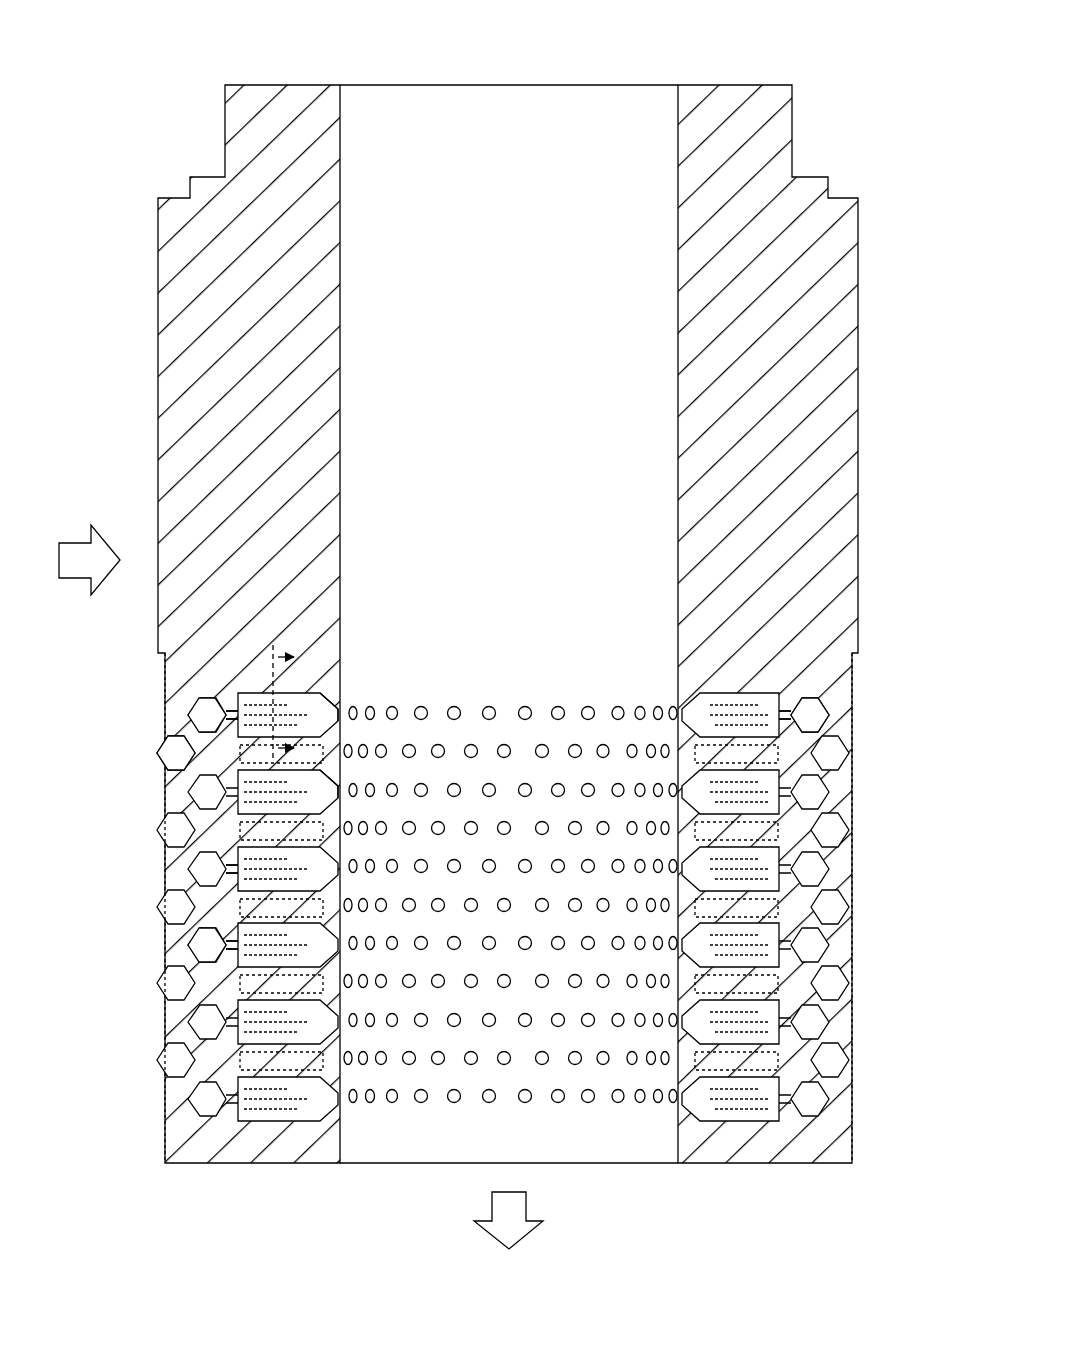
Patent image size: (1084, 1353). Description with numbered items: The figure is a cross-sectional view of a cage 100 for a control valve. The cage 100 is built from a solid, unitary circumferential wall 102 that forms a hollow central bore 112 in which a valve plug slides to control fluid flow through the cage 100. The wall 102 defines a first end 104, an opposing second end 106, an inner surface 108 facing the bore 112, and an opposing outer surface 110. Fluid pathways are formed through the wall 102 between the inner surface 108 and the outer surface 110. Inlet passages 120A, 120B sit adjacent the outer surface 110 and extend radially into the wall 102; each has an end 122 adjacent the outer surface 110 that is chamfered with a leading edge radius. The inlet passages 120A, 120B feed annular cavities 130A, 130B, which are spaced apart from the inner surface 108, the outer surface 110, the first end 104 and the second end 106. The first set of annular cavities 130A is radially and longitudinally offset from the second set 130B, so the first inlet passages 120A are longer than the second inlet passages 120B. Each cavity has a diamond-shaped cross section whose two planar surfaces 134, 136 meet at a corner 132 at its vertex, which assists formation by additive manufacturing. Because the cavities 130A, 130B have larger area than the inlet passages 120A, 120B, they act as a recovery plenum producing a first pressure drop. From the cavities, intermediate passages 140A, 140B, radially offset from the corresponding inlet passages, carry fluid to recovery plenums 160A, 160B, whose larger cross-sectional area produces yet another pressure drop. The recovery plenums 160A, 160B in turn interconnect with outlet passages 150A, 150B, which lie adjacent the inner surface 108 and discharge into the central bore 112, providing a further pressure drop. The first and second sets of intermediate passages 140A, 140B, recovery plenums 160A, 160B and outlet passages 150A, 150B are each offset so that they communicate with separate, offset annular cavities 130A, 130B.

The cage 100 is at (501, 654).
The circumferential wall 102 is at (170, 258).
The first end 104 is at (716, 78).
The second end 106 is at (718, 1168).
The inner surface 108 is at (345, 136).
The outer surface 110 is at (451, 604).
The central bore 112 is at (534, 417).
The first set of inlet passages 120A is at (190, 708).
The second set of inlet passages 120B is at (172, 738).
The end 122 is at (176, 712).
The first set of annular cavities 130A is at (205, 868).
The second set of annular cavities 130B is at (210, 896).
The corner 132 is at (205, 858).
The planar surface 134 is at (200, 908).
The planar surface 136 is at (210, 902).
The first set of intermediate passages 140A is at (238, 705).
The second set of intermediate passages 140B is at (166, 786).
The first set of outlet passages 150A is at (325, 712).
The second set of outlet passages 150B is at (336, 752).
The first set of recovery plenums 160A is at (305, 700).
The second set of recovery plenums 160B is at (318, 778).